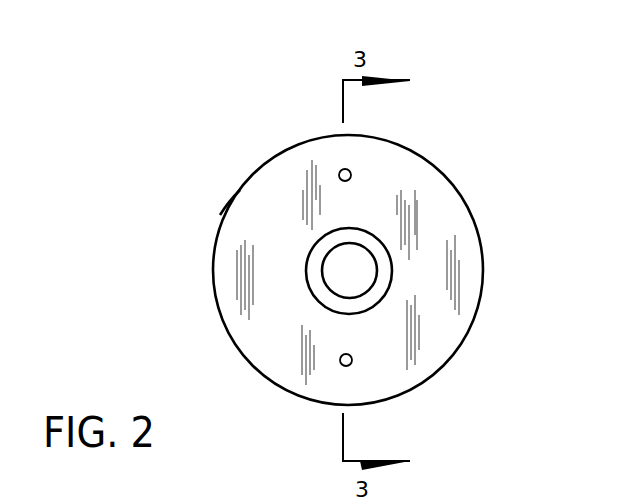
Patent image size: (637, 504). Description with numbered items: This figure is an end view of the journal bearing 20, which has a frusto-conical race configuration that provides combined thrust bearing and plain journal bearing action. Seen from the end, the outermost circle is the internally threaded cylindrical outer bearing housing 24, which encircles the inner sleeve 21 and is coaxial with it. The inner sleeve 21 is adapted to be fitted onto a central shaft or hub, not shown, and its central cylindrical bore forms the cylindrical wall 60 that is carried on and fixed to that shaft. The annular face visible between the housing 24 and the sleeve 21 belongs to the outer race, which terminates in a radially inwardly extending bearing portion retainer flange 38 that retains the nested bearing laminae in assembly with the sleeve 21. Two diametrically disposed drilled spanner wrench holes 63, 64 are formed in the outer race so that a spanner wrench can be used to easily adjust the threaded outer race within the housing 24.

The journal bearing 20 is at (445, 164).
The outer bearing housing 24 is at (233, 207).
The bearing portion retainer flange 38 is at (288, 314).
The inner sleeve 21 is at (369, 288).
The cylindrical wall 60 is at (367, 261).
The spanner wrench hole 63 is at (348, 354).
The spanner wrench hole 64 is at (351, 175).